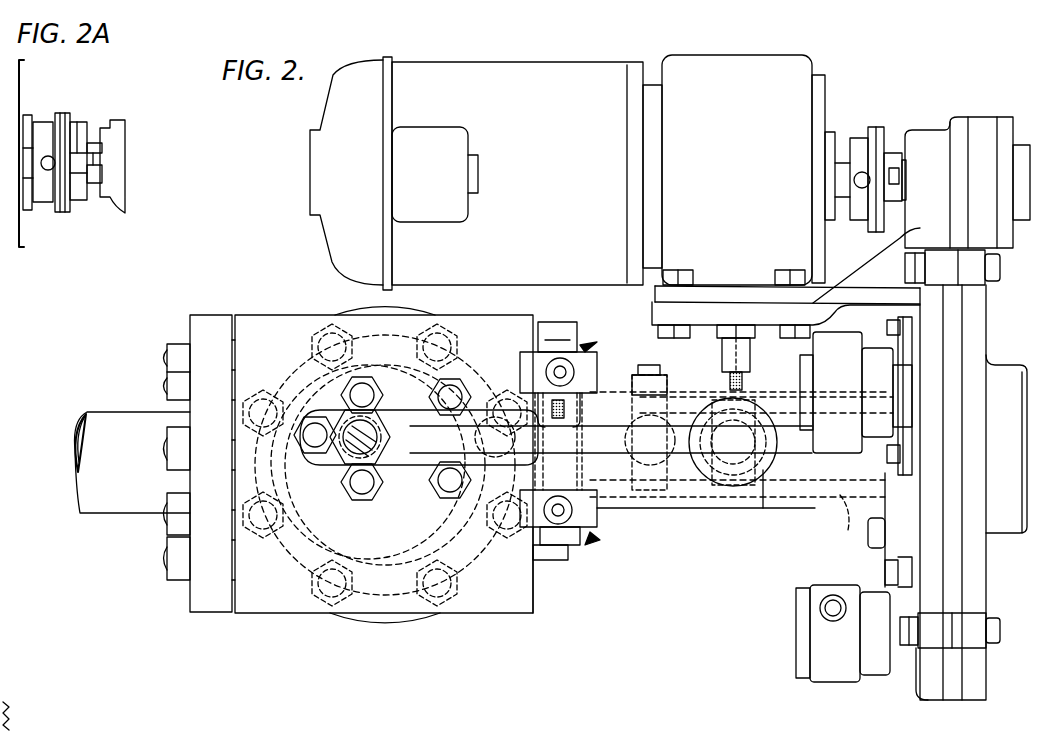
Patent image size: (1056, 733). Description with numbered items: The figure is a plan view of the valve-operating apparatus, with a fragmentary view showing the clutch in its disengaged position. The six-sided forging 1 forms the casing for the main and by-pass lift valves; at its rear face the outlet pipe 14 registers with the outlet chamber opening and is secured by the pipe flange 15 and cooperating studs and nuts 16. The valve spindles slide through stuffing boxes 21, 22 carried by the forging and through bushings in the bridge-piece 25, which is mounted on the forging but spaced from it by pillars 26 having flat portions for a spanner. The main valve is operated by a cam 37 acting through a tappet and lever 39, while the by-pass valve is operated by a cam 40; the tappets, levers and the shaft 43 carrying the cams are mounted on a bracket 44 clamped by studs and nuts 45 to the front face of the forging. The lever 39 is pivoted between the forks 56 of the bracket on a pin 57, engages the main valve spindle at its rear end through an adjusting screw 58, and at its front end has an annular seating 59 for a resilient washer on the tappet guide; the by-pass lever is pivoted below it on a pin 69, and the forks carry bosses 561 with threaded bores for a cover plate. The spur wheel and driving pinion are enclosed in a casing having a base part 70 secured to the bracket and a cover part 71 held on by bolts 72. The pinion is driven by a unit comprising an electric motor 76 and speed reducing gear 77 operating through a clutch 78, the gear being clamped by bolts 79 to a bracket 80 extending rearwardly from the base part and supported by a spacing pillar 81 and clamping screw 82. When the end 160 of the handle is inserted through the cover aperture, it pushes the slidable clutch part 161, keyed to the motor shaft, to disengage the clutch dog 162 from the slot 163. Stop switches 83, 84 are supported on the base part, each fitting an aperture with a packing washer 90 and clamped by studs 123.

In FIG. 2, the forging 1 is at (496, 614).
In FIG. 2, the outlet pipe 14 is at (116, 420).
In FIG. 2, the pipe flange 15 is at (215, 320).
In FIG. 2, the studs and nuts 16 is at (165, 352).
In FIG. 2, the stuffing box 21 is at (375, 410).
In FIG. 2, the stuffing box 22 is at (495, 410).
In FIG. 2, the bridge-piece 25 is at (388, 418).
In FIG. 2, the pillars 26 is at (312, 425).
In FIG. 2, the cam 37 is at (742, 378).
In FIG. 2, the lever 39 is at (607, 458).
In FIG. 2, the cam 40 is at (650, 490).
In FIG. 2, the shaft 43 is at (805, 495).
In FIG. 2, the bracket 44 is at (845, 500).
In FIG. 2, the studs and nuts 45 is at (590, 344).
In FIG. 2, the forks 56 is at (597, 362).
In FIG. 2, the pin 57 is at (557, 335).
In FIG. 2, the adjusting screw 58 is at (358, 445).
In FIG. 2, the annular seating 59 is at (752, 486).
In FIG. 2, the pin 69 is at (590, 505).
In FIG. 2, the base part 70 is at (937, 316).
In FIG. 2, the cover part 71 is at (975, 262).
In FIG. 2, the bolts 72 is at (1000, 272).
In FIG. 2, the electric motor 76 is at (455, 68).
In FIG. 2, the speed reducing gear 77 is at (812, 66).
In FIG. 2, the clutch 78 is at (876, 127).
In FIG. 2, the bolts 79 is at (676, 272).
In FIG. 2, the bracket 80 is at (912, 296).
In FIG. 2, the spacing pillar 81 is at (750, 366).
In FIG. 2, the clamping screw 82 is at (748, 345).
In FIG. 2, the stop switch 83 is at (845, 672).
In FIG. 2, the stop switch 84 is at (850, 348).
In FIG. 2, the packing washer 90 is at (922, 383).
In FIG. 2, the studs 123 is at (888, 322).
In FIG. 2A, the end of the handle 160 is at (101, 128).
In FIG. 2A, the slidable clutch part 161 is at (47, 120).
In FIG. 2, the slidable clutch part 161 is at (858, 218).
In FIG. 2A, the clutch dog 162 is at (97, 184).
In FIG. 2, the clutch dog 162 is at (893, 168).
In FIG. 2A, the slot 163 is at (80, 128).
In FIG. 2, the bosses 561 is at (575, 545).